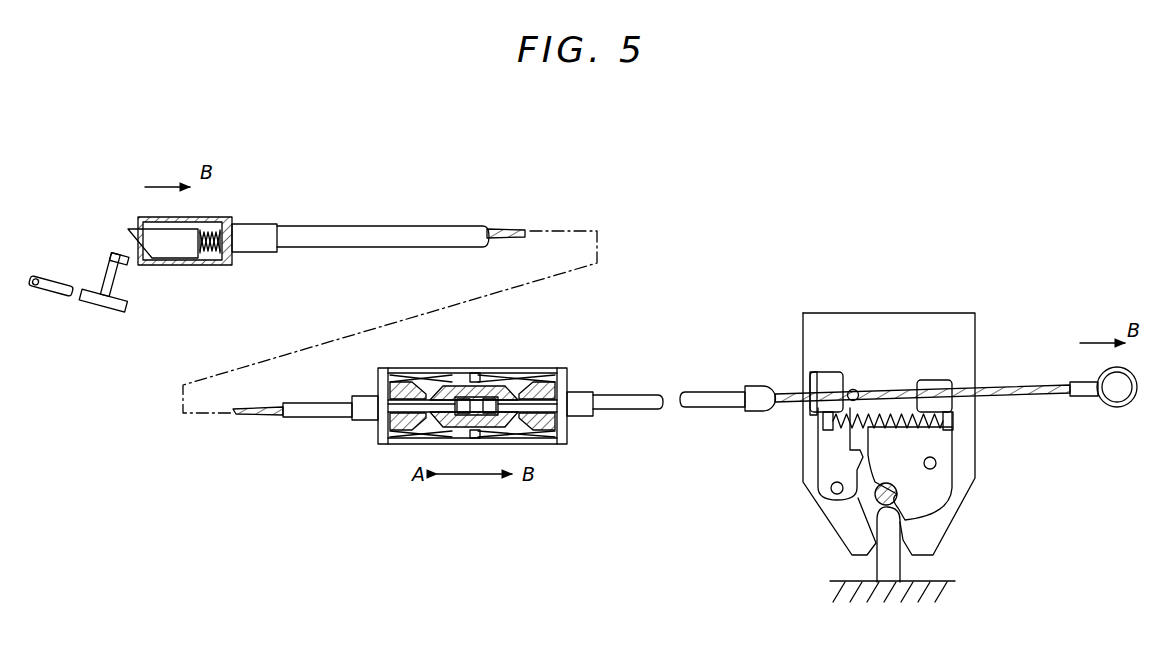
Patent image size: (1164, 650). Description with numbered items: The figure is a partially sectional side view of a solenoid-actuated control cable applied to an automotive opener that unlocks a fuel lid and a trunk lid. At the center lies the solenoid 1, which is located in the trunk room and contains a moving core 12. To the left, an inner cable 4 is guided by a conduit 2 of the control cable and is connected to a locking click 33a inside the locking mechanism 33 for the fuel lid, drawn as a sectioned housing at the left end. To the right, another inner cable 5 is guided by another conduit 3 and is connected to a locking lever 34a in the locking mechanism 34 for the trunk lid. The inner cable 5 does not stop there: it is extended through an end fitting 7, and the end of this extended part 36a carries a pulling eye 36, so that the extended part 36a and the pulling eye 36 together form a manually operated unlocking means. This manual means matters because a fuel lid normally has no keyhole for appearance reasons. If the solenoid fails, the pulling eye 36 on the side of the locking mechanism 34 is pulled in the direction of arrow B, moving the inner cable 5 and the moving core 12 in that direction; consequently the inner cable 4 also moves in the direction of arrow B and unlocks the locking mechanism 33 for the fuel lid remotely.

The solenoid 1 is at (472, 376).
The conduit 2 is at (350, 222).
The conduit 3 is at (627, 412).
The inner cable 4 is at (508, 228).
The inner cable 5 is at (787, 395).
The end fitting 7 is at (858, 391).
The moving core 12 is at (514, 367).
The locking mechanism 33 is at (158, 266).
The locking click 33a is at (186, 251).
The locking mechanism 34 is at (863, 327).
The locking lever 34a is at (833, 445).
The pulling eye 36 is at (1105, 407).
The extended part 36a is at (1008, 385).